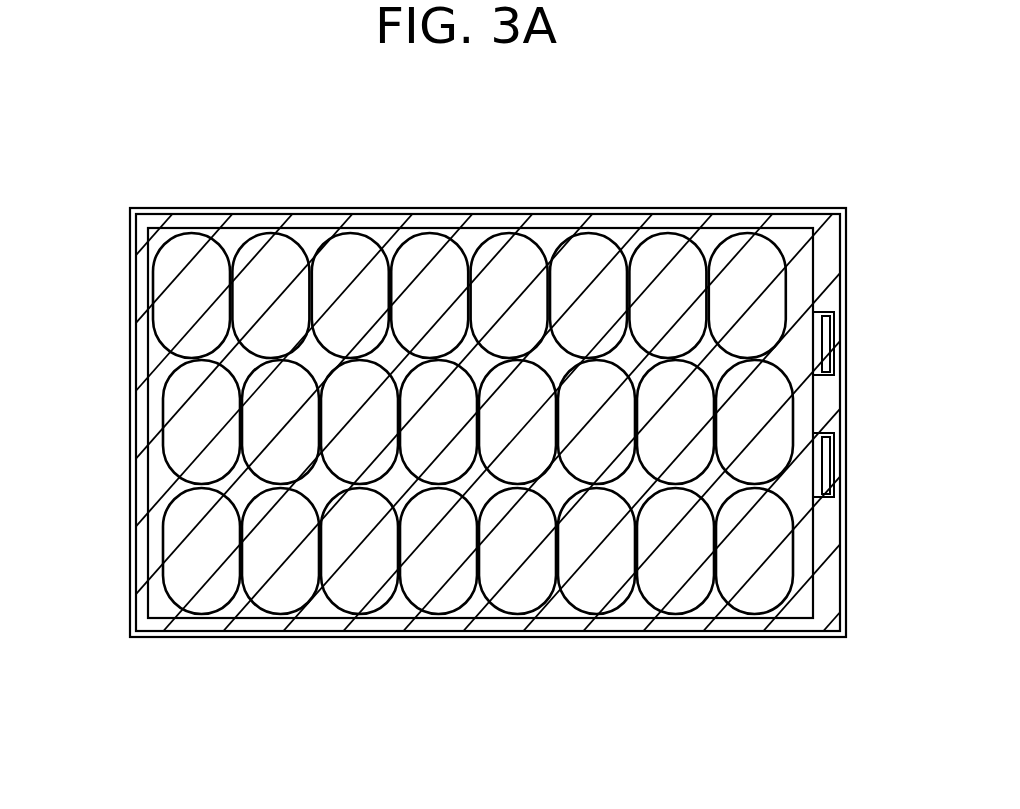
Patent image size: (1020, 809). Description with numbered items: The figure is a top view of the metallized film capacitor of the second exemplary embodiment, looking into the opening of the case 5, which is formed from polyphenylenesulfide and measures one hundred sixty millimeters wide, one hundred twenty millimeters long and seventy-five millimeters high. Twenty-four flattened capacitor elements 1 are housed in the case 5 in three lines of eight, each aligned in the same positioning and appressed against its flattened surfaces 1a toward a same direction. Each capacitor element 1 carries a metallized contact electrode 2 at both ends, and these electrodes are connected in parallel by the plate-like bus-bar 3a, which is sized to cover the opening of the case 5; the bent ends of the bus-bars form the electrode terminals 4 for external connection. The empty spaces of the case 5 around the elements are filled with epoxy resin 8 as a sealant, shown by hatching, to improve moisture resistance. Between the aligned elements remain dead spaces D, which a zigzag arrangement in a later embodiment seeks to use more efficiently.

The capacitor element 1 is at (501, 422).
The flattened surface 1a is at (716, 585).
The metallized contact electrode 2 is at (436, 288).
The bus-bar 3a is at (128, 625).
The electrode terminal 4 is at (877, 404).
The case 5 is at (693, 207).
The epoxy resin 8 is at (405, 226).
The dead space D is at (238, 362).